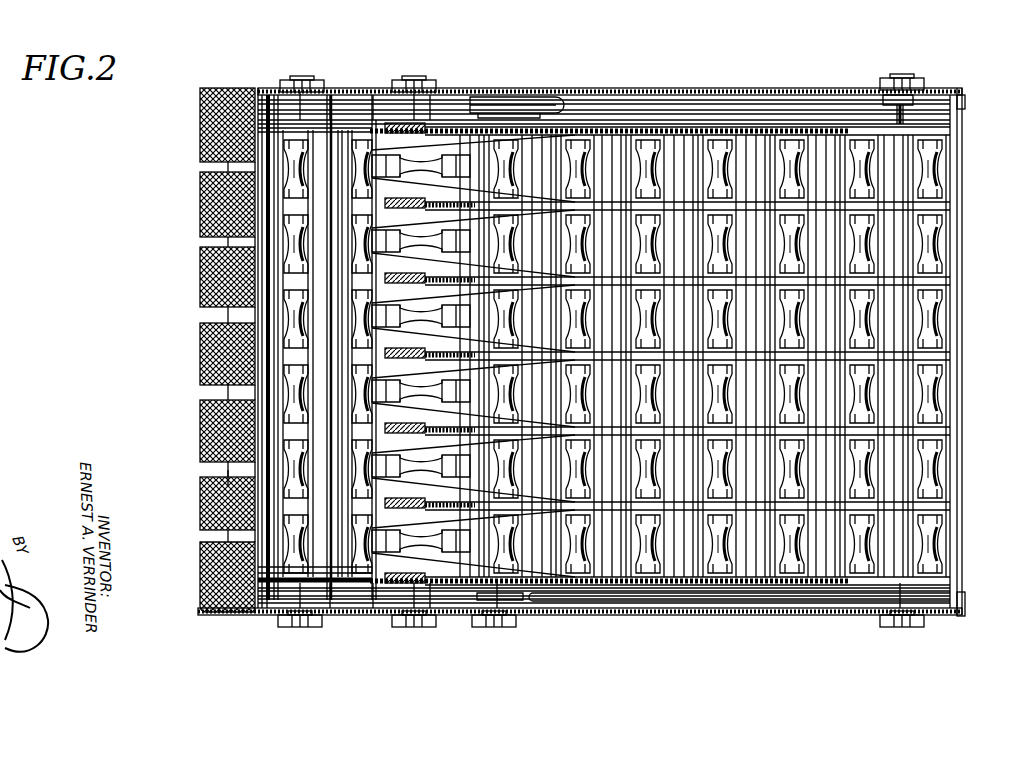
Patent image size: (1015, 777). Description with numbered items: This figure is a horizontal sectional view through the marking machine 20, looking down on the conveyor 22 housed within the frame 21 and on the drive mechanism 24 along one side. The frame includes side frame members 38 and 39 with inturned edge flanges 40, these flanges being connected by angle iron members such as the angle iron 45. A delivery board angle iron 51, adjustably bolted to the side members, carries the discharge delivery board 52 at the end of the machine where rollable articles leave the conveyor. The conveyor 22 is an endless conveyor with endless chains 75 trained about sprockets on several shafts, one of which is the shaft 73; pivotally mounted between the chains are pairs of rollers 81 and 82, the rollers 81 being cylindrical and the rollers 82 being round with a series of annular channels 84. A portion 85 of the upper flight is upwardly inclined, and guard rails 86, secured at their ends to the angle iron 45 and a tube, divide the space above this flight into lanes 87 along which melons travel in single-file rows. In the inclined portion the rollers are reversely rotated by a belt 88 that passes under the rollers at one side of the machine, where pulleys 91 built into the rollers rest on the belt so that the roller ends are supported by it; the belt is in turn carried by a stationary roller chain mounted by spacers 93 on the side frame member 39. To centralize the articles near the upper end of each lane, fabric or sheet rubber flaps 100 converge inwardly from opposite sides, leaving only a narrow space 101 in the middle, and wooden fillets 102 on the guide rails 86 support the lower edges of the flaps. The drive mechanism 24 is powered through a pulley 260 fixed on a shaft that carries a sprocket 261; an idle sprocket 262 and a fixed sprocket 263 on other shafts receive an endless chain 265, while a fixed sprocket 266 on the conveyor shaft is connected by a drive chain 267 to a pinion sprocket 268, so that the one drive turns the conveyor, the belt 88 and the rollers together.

The marking machine 20 is at (803, 50).
The frame 21 is at (670, 92).
The conveyor 22 is at (940, 167).
The drive mechanism 24 is at (391, 608).
The side frame member 38 is at (752, 92).
The side frame member 39 is at (718, 615).
The inturned edge flange 40 is at (964, 108).
The angle iron member 45 is at (955, 414).
The delivery board angle iron 51 is at (205, 410).
The discharge delivery board 52 is at (210, 504).
The shaft 73 is at (893, 113).
The endless chain 75 is at (674, 602).
The roller 81 is at (758, 253).
The roller 82 is at (726, 184).
The annular channel 84 is at (926, 333).
The upwardly inclined portion 85 is at (600, 150).
The guard rail 86 is at (646, 108).
The lane 87 is at (945, 178).
The belt 88 is at (660, 575).
The pulley 91 is at (762, 572).
The spacer 93 is at (576, 606).
The flap 100 is at (467, 149).
The narrow space 101 is at (400, 160).
The wooden fillet 102 is at (410, 134).
The pulley 260 is at (552, 98).
The sprocket 261 is at (497, 618).
The idle sprocket 262 is at (300, 614).
The fixed sprocket 263 is at (430, 616).
The endless chain 265 is at (356, 606).
The fixed sprocket 266 is at (312, 92).
The drive chain 267 is at (345, 106).
The pinion sprocket 268 is at (430, 92).